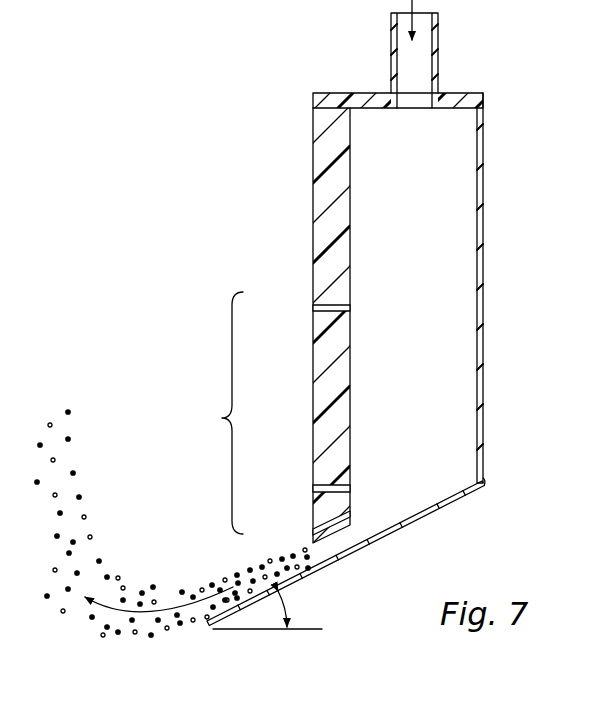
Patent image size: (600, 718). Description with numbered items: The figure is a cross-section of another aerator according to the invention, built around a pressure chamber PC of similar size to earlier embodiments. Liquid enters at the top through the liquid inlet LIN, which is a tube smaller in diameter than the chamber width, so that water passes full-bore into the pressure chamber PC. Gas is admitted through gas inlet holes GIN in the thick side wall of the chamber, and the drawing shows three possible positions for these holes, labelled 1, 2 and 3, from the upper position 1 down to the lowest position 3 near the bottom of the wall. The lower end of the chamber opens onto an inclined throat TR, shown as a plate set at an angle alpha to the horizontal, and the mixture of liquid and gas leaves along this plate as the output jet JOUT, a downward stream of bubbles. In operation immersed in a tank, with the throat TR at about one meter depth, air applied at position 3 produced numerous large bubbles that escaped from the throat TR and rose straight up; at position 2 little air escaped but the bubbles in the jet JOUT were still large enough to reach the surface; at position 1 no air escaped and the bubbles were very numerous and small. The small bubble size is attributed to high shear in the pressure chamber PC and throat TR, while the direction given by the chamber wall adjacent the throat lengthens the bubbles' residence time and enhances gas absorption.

The first gas inlet hole position 1 is at (311, 308).
The second gas inlet hole position 2 is at (311, 489).
The third gas inlet hole position 3 is at (311, 520).
The pressure chamber PC is at (430, 187).
The liquid inlet LIN is at (413, 67).
The gas inlet holes GIN is at (222, 418).
The throat TR is at (340, 549).
The output jet JOUT is at (167, 610).
The tray inclination angle alpha is at (286, 608).